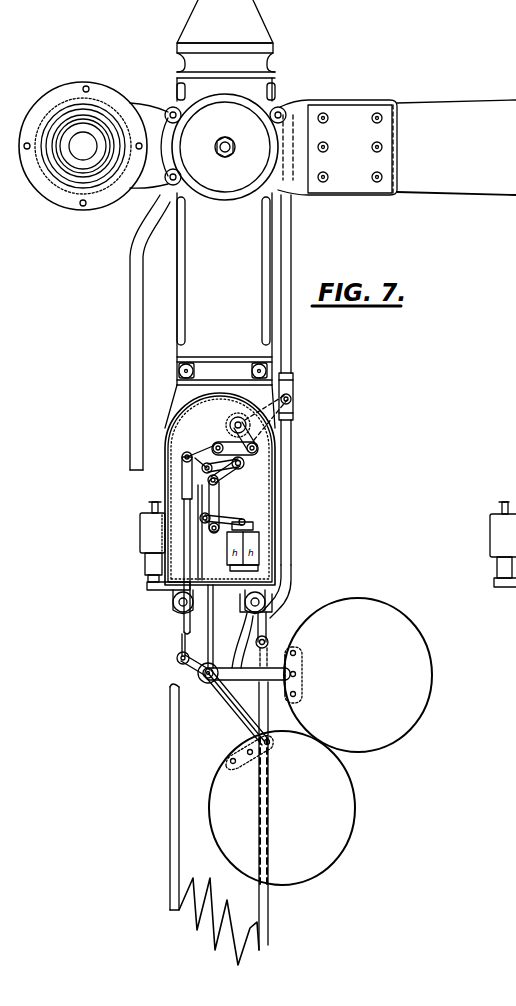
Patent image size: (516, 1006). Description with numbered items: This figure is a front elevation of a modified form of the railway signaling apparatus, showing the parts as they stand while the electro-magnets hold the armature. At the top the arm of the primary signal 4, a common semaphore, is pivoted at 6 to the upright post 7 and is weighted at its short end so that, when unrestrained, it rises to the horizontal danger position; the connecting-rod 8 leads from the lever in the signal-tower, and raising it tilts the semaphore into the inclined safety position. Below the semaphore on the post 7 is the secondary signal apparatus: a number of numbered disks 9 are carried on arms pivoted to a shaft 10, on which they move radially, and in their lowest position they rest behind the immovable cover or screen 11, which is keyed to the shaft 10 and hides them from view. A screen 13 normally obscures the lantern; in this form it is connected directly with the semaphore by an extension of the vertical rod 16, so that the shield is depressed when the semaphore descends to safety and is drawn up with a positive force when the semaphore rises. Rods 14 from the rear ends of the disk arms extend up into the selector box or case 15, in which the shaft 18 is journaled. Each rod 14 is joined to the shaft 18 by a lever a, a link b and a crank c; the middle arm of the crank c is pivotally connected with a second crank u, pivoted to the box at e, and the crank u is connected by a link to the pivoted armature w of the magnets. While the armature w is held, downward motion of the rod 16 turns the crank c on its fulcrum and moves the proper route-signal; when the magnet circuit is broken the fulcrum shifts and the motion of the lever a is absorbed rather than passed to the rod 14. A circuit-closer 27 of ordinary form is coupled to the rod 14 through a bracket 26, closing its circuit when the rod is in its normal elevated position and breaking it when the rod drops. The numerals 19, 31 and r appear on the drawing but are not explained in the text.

The arm of the primary signal 4 is at (397, 147).
The pivot 6 is at (233, 147).
The upright post 7 is at (225, 138).
The connecting-rod 8 is at (138, 331).
The disks 9 is at (184, 460).
The shaft 10 is at (200, 681).
The cover or screen 11 is at (282, 808).
The screen 13 is at (318, 675).
The rods 14 is at (191, 550).
The selector box or case 15 is at (224, 371).
The vertical rod 16 is at (289, 265).
The shaft 18 is at (231, 424).
The flange 19 is at (249, 753).
The bracket 26 is at (501, 594).
The circuit-closer 27 is at (165, 546).
The rod 31 is at (199, 540).
The lever a is at (247, 437).
The link b is at (224, 449).
The crank c is at (222, 445).
The pivot e is at (224, 467).
The link r is at (219, 503).
The second crank u is at (224, 475).
The pivoted armature w is at (238, 520).